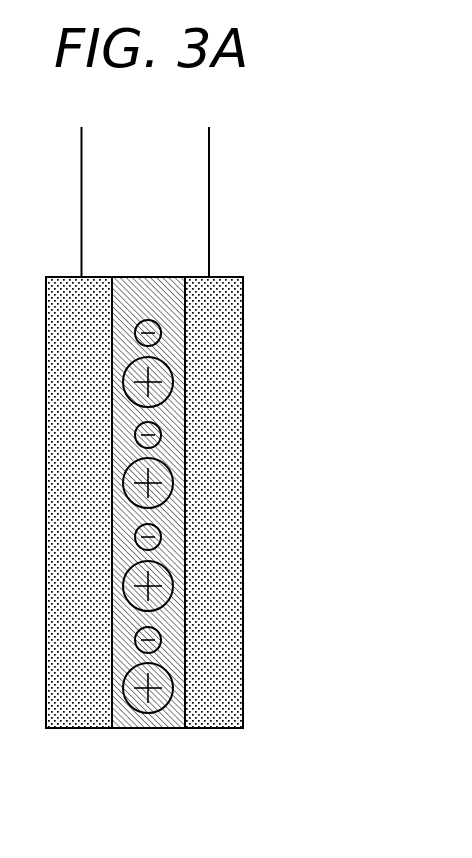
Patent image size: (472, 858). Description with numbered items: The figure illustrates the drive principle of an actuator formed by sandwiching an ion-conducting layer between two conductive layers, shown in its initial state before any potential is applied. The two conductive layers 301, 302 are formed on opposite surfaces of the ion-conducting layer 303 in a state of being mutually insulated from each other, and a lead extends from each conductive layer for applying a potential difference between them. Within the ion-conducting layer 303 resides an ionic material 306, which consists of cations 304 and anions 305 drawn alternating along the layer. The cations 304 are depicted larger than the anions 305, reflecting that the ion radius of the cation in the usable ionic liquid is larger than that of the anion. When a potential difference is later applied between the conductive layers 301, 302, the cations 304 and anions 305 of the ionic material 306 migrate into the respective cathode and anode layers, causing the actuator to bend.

The conductive layer 301 is at (74, 720).
The conductive layer 302 is at (223, 720).
The ion-conducting layer 303 is at (150, 720).
The cation 304 is at (166, 704).
The anion 305 is at (158, 650).
The ionic material 306 is at (328, 618).